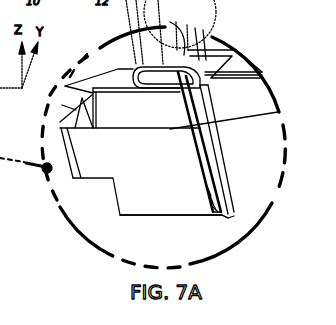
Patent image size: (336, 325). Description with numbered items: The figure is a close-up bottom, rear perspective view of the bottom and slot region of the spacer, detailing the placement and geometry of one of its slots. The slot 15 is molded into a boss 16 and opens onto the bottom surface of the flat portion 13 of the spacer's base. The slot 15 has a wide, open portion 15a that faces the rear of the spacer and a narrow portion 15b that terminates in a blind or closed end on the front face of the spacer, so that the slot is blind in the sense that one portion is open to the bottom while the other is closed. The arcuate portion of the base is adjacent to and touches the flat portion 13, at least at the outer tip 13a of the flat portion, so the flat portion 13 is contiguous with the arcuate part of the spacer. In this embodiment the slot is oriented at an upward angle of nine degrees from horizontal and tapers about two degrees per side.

The flat portion 13 is at (152, 170).
The outer tip 13a is at (220, 214).
The slot 15 is at (160, 86).
The wide, open portion 15a is at (195, 44).
The narrow portion 15b is at (200, 190).
The boss 16 is at (182, 22).